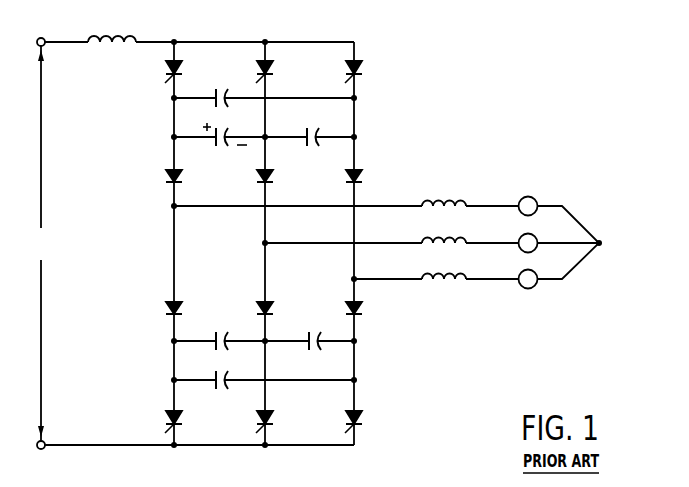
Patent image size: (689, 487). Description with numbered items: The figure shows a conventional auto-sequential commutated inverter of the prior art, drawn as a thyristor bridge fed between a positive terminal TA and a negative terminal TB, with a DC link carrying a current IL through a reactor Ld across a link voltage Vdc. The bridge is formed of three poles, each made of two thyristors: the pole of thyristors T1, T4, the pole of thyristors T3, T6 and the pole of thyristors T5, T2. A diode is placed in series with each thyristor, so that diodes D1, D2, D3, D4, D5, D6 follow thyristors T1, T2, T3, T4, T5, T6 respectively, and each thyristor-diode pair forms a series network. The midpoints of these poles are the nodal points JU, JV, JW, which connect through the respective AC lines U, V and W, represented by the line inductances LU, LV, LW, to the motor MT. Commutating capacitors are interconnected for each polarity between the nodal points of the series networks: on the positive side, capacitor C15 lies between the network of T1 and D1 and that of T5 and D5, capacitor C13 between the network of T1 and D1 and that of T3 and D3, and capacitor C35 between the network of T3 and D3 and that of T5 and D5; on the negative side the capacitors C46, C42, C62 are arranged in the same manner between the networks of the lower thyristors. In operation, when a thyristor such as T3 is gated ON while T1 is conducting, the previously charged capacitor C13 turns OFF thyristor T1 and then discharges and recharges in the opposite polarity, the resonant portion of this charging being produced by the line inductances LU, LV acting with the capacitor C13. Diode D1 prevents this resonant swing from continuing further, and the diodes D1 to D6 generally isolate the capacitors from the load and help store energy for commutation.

The positive terminal TA is at (84, 36).
The negative terminal TB is at (101, 442).
The current IL is at (52, 137).
The DC link voltage Vdc is at (48, 339).
The DC link reactor Ld is at (116, 43).
The thyristor T1 is at (167, 67).
The thyristor T2 is at (362, 417).
The thyristor T3 is at (273, 66).
The thyristor T4 is at (166, 417).
The thyristor T5 is at (362, 66).
The thyristor T6 is at (273, 417).
The diode D1 is at (166, 176).
The diode D2 is at (361, 308).
The diode D3 is at (272, 178).
The diode D4 is at (166, 306).
The diode D5 is at (361, 176).
The diode D6 is at (272, 307).
The capacitor C15 is at (222, 88).
The capacitor C13 is at (221, 149).
The capacitor C35 is at (311, 126).
The capacitor C46 is at (221, 323).
The capacitor C42 is at (220, 393).
The capacitor C62 is at (308, 356).
The nodal point JU is at (284, 205).
The nodal point JV is at (265, 243).
The nodal point JW is at (354, 279).
The line inductance LU is at (456, 199).
The line inductance LV is at (456, 239).
The line inductance LW is at (458, 275).
The motor MT is at (574, 243).